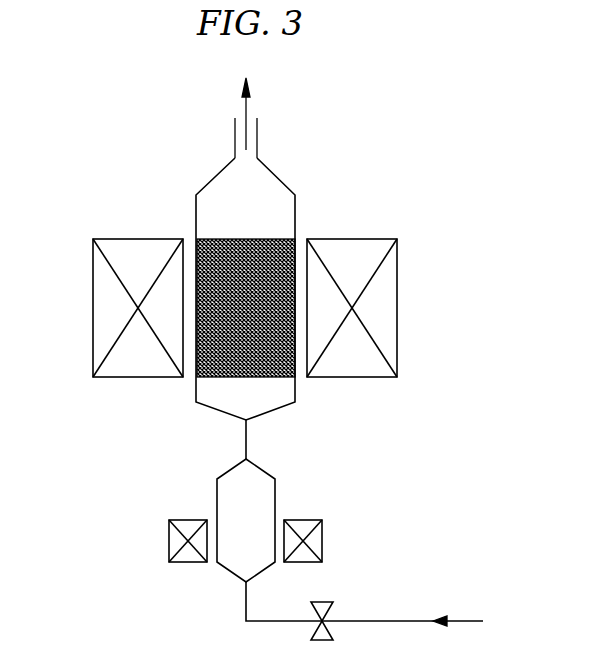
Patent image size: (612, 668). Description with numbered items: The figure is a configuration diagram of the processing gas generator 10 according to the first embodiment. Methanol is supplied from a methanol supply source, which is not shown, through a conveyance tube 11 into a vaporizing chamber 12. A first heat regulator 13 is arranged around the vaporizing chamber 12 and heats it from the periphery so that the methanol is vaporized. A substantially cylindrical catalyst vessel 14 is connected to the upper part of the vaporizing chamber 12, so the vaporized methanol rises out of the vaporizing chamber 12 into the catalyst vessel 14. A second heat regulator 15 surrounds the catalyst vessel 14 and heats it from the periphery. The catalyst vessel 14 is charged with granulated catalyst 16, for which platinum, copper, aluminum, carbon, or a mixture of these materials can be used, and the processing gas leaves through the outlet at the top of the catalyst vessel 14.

The processing gas generator 10 is at (60, 112).
The conveyance tube 11 is at (447, 617).
The vaporizing chamber 12 is at (215, 483).
The first heat regulator 13 is at (312, 519).
The catalyst vessel 14 is at (275, 172).
The second heat regulator 15 is at (370, 239).
The catalyst 16 is at (270, 236).